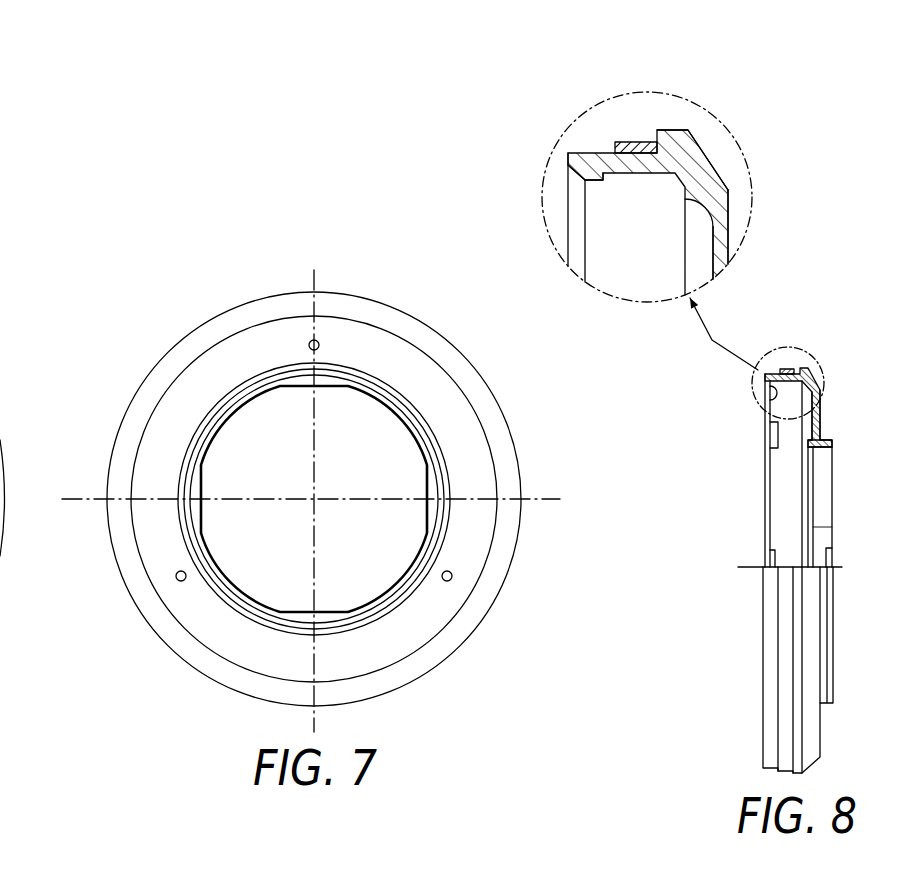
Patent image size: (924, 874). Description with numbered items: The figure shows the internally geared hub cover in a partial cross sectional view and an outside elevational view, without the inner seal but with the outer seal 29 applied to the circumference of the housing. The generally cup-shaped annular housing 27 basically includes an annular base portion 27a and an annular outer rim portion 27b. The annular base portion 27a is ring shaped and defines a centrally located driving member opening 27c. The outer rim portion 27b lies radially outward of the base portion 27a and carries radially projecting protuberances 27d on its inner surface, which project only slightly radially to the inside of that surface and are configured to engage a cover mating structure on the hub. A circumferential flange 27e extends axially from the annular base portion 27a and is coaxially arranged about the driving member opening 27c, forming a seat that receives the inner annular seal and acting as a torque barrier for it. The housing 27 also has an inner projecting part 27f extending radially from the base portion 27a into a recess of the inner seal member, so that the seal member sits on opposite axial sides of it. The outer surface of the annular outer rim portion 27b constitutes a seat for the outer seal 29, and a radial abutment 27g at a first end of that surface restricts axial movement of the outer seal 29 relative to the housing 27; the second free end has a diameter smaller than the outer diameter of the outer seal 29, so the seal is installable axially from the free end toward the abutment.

In FIG. 7, the annular housing 27 is at (432, 302).
In FIG. 8, the annular housing 27 is at (762, 621).
In FIG. 7, the annular base portion 27a is at (477, 447).
In FIG. 8, the annular base portion 27a is at (820, 407).
In FIG. 8, the annular outer rim portion 27b is at (766, 392).
In FIG. 7, the driving member opening 27c is at (232, 414).
In FIG. 8, the driving member opening 27c is at (825, 452).
In FIG. 8, the radially projecting protuberance 27d is at (775, 389).
In FIG. 7, the circumferential flange 27e is at (415, 410).
In FIG. 8, the circumferential flange 27e is at (828, 440).
In FIG. 8, the inner projecting part 27f is at (815, 527).
In FIG. 8, the radial abutment 27g is at (648, 170).
In FIG. 8, the outer seal 29 is at (788, 372).